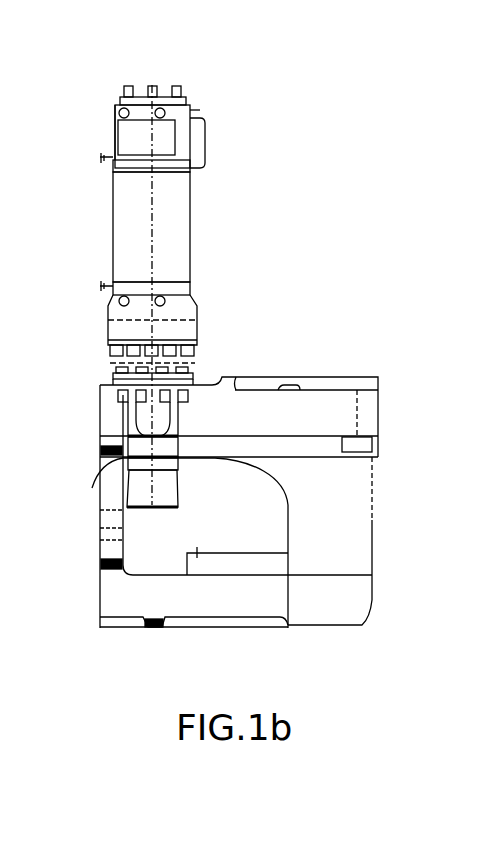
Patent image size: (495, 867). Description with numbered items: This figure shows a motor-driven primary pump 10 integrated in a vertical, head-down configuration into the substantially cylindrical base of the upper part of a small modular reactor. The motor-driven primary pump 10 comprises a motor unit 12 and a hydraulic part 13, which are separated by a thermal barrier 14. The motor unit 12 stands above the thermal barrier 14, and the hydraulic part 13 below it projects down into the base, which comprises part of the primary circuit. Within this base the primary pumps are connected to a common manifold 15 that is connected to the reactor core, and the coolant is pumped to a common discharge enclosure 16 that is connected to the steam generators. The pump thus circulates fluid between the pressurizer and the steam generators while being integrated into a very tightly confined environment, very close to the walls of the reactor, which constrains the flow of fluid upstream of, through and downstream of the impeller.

The motor-driven primary pump 10 is at (214, 203).
The motor unit 12 is at (113, 226).
The hydraulic part 13 is at (130, 458).
The thermal barrier 14 is at (112, 352).
The common manifold 15 is at (338, 495).
The common discharge enclosure 16 is at (270, 510).